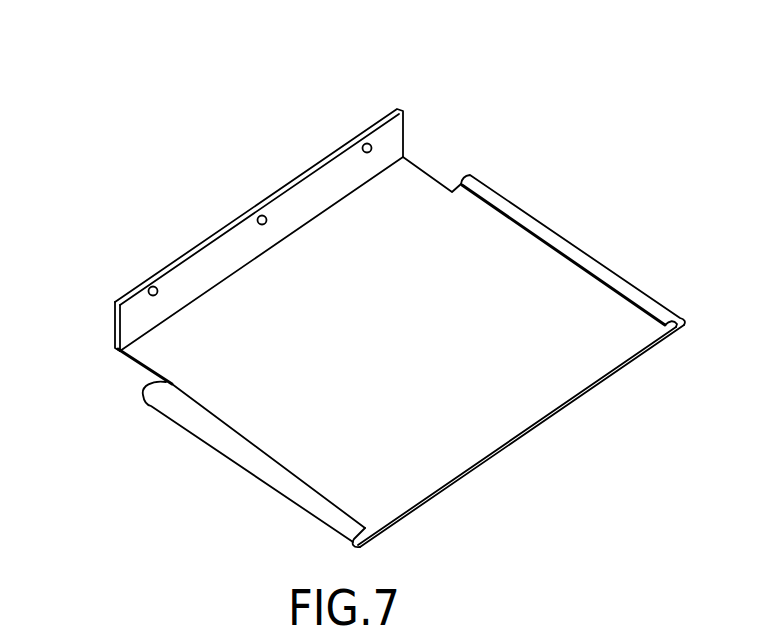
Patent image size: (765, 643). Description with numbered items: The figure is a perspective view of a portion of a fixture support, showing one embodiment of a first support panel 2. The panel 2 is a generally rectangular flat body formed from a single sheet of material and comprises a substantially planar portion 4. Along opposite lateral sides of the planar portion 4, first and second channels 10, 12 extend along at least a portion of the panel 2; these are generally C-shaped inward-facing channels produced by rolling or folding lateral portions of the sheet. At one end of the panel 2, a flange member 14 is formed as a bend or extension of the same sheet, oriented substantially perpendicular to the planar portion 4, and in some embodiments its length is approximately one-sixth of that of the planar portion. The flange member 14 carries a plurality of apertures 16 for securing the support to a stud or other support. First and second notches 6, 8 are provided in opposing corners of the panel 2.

The first support panel 2 is at (498, 136).
The planar portion 4 is at (267, 308).
The first notch 6 is at (101, 355).
The second notch 8 is at (438, 163).
The first channel 10 is at (250, 463).
The second channel 12 is at (592, 262).
The flange member 14 is at (297, 161).
The apertures 16 is at (152, 286).